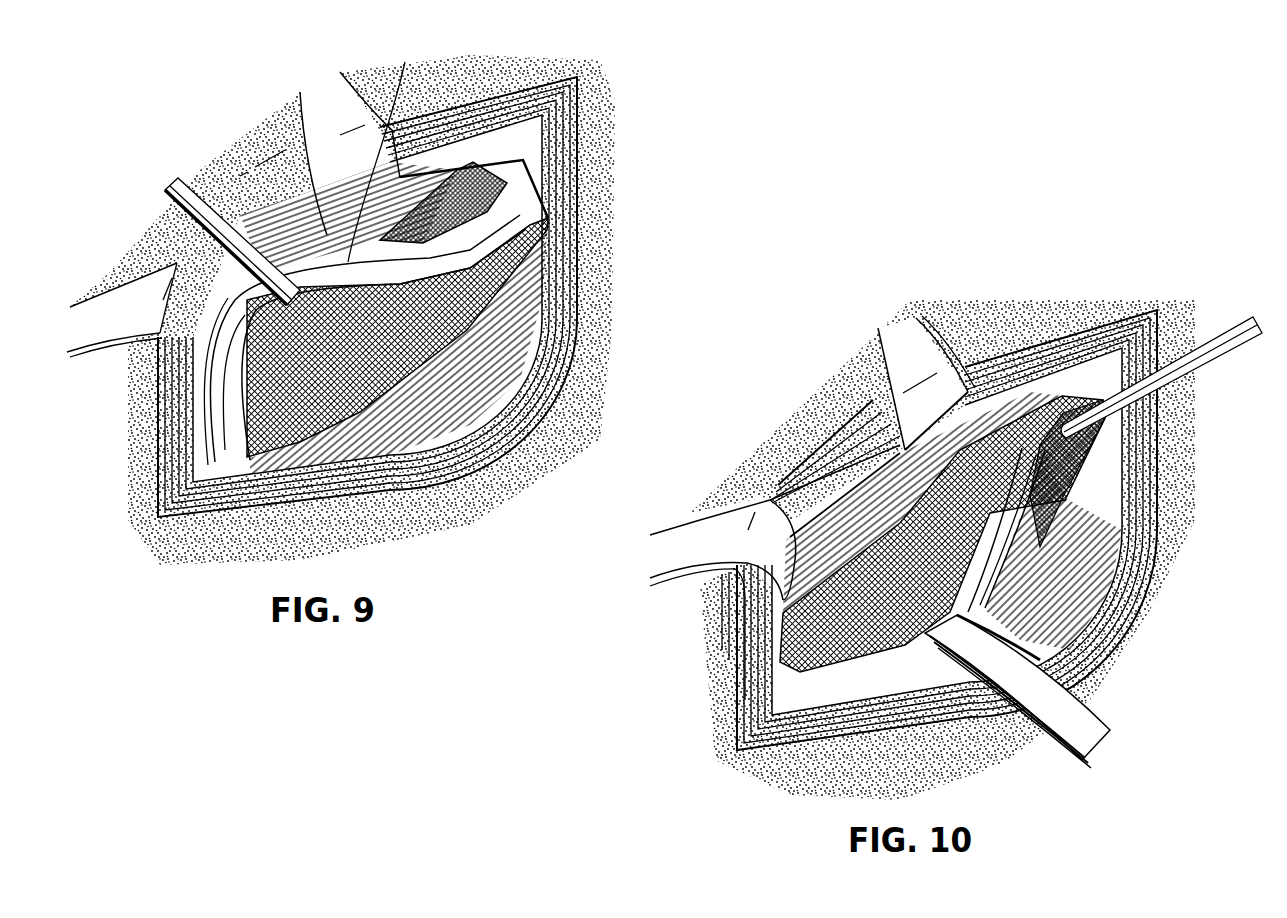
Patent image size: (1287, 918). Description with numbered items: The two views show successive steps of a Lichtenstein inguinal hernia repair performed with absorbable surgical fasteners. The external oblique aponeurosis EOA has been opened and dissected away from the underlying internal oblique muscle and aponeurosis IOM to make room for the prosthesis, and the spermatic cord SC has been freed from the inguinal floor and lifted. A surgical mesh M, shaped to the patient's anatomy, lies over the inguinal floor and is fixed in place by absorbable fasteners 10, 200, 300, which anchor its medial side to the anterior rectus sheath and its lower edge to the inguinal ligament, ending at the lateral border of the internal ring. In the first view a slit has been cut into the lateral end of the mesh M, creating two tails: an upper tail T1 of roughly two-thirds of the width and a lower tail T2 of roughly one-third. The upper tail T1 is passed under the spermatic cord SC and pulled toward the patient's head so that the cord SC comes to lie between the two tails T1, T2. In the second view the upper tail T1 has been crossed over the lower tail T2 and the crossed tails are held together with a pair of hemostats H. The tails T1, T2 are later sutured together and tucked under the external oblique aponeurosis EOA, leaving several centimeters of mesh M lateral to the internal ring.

In FIG. 9, the absorbable fastener 10 is at (397, 350).
In FIG. 10, the absorbable fastener 10 is at (905, 549).
In FIG. 9, the absorbable fastener 200 is at (397, 350).
In FIG. 10, the absorbable fastener 200 is at (905, 549).
In FIG. 9, the absorbable fastener 300 is at (430, 365).
In FIG. 10, the absorbable fastener 300 is at (1057, 543).
In FIG. 9, the external oblique aponeurosis EOA is at (223, 173).
In FIG. 10, the external oblique aponeurosis EOA is at (813, 460).
In FIG. 9, the internal oblique muscle and aponeurosis IOM is at (400, 175).
In FIG. 10, the internal oblique muscle and aponeurosis IOM is at (800, 467).
In FIG. 9, the spermatic cord SC is at (384, 151).
In FIG. 10, the spermatic cord SC is at (1100, 640).
In FIG. 9, the upper tail T1 is at (523, 160).
In FIG. 10, the upper tail T1 is at (1037, 398).
In FIG. 9, the lower tail T2 is at (523, 257).
In FIG. 10, the lower tail T2 is at (1047, 460).
In FIG. 9, the mesh M is at (538, 218).
In FIG. 10, the mesh M is at (1113, 427).
In FIG. 10, the hemostat H is at (1232, 333).